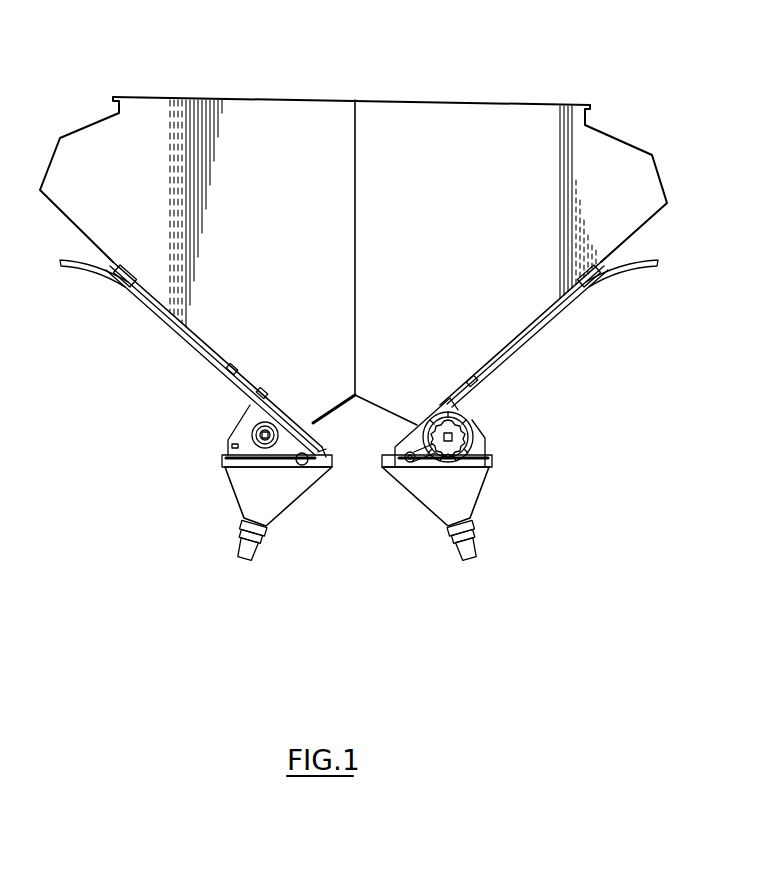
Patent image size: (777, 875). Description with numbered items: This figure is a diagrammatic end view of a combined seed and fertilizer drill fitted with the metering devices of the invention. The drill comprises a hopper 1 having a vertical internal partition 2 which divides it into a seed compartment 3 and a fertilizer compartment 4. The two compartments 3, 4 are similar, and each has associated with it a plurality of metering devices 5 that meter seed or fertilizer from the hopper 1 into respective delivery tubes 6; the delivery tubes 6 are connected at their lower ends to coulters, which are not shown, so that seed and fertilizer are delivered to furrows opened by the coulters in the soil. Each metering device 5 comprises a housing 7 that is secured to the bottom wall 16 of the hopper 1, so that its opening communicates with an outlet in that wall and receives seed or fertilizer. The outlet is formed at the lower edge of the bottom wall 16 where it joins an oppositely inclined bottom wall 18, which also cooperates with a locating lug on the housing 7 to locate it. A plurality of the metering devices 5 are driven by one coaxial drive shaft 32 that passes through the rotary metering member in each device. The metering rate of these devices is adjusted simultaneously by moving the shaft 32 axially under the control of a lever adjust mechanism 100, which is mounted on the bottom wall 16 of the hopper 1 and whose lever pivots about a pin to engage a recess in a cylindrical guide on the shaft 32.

The hopper 1 is at (483, 91).
The vertical internal partition 2 is at (355, 114).
The seed compartment 3 is at (480, 197).
The fertilizer compartment 4 is at (272, 201).
The metering device 5 is at (216, 446).
The delivery tube 6 is at (278, 531).
The housing 7 is at (242, 411).
The bottom wall 16 is at (550, 307).
The oppositely inclined bottom wall 18 is at (378, 413).
The coaxial drive shaft 32 is at (248, 437).
The lever adjust mechanism 100 is at (156, 323).